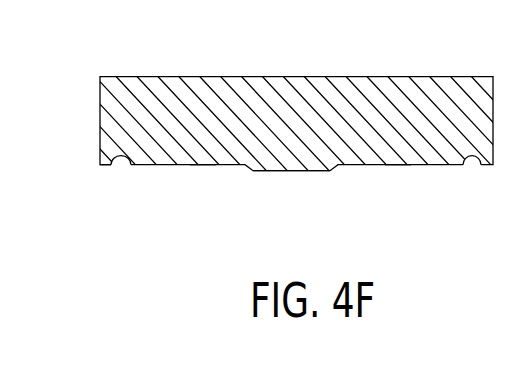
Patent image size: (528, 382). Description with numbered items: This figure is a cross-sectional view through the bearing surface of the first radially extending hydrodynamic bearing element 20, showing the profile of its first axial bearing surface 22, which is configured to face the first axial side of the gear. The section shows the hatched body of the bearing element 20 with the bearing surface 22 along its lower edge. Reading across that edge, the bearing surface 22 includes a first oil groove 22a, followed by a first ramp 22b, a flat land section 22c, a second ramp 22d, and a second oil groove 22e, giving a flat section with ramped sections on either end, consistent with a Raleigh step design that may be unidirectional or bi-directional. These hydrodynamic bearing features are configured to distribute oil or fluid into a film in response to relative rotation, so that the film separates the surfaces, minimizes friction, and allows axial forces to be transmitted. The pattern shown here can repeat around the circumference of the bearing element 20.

The first radially extending hydrodynamic bearing element 20 is at (153, 83).
The first axial bearing surface 22 is at (108, 158).
The first oil groove 22a is at (117, 165).
The first ramp 22b is at (203, 165).
The flat land section 22c is at (295, 171).
The second ramp 22d is at (398, 165).
The second oil groove 22e is at (471, 165).